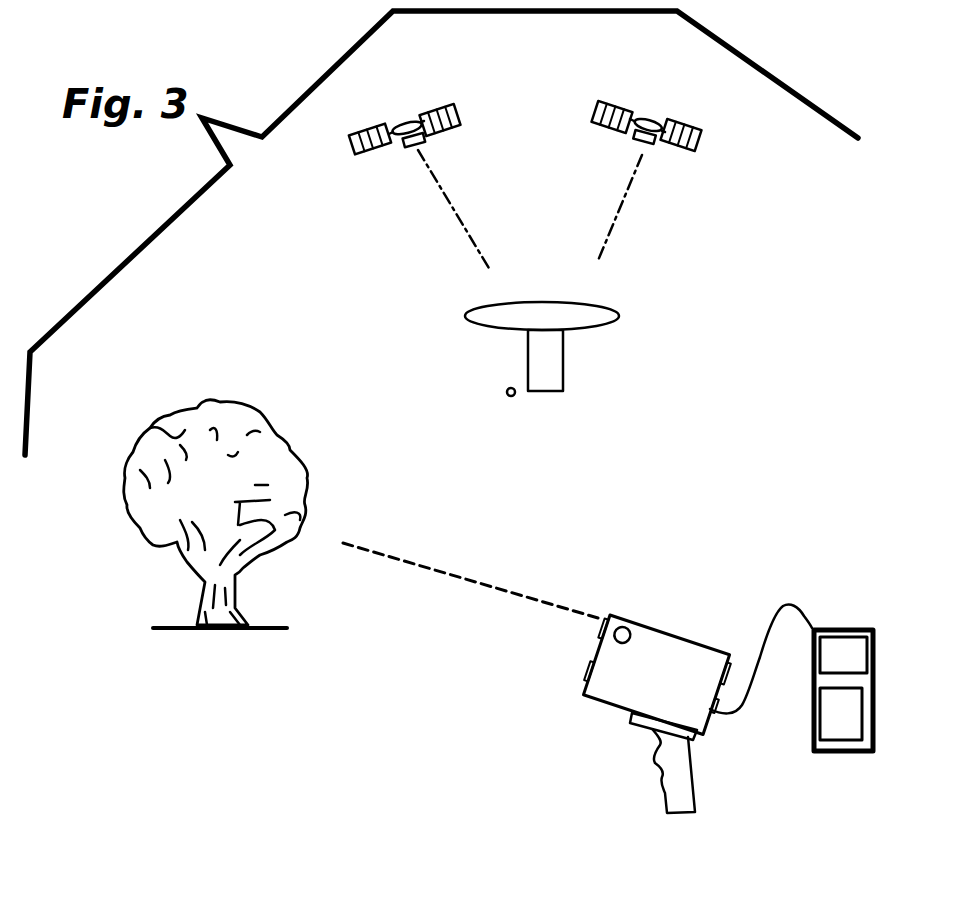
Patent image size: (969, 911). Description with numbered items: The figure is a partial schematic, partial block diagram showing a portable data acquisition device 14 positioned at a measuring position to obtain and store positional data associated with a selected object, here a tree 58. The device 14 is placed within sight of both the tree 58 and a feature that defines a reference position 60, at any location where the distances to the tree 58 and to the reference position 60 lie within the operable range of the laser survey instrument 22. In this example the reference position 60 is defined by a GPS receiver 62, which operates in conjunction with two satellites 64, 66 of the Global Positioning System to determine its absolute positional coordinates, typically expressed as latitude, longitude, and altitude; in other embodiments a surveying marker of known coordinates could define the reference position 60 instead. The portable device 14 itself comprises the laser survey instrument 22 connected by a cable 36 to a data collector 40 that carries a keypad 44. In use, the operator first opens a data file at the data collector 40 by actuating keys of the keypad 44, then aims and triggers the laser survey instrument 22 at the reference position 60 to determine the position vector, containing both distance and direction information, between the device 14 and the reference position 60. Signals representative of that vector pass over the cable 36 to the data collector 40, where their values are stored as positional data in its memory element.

The portable data acquisition device 14 is at (778, 584).
The laser survey instrument 22 is at (643, 637).
The cable 36 is at (750, 687).
The data collector 40 is at (848, 640).
The keypad 44 is at (837, 735).
The tree 58 is at (145, 505).
The reference position 60 is at (506, 388).
The GPS receiver 62 is at (580, 315).
The GPS satellite 64 is at (360, 153).
The GPS satellite 66 is at (690, 147).